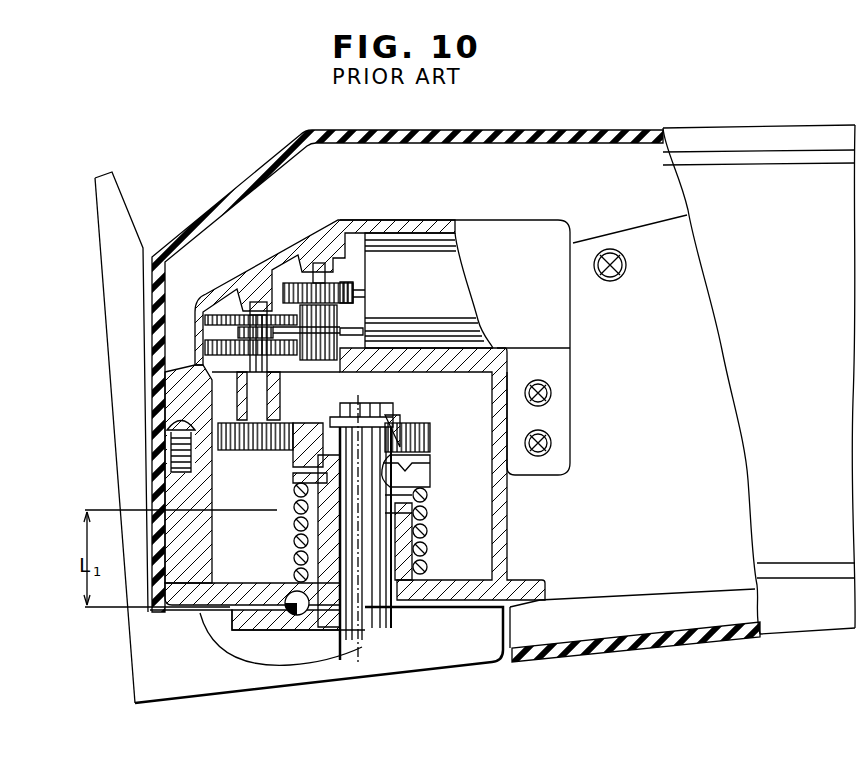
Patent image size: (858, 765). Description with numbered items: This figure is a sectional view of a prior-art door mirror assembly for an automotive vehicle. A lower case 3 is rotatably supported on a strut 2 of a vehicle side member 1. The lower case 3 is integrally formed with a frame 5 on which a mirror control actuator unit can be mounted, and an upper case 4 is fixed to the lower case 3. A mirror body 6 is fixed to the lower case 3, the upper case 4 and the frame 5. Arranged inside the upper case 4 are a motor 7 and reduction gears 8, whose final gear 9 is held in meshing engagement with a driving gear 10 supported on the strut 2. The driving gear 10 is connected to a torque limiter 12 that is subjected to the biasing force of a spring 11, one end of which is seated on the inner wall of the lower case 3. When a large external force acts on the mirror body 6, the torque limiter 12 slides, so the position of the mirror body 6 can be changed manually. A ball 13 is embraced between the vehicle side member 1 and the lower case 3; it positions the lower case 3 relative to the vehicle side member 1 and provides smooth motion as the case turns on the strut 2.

The vehicle side member 1 is at (117, 210).
The strut 2 is at (334, 580).
The lower case 3 is at (222, 612).
The upper case 4 is at (286, 255).
The frame 5 is at (698, 336).
The mirror body 6 is at (589, 144).
The motor 7 is at (400, 250).
The reduction gears 8 is at (227, 316).
The final gear 9 is at (253, 452).
The driving gear 10 is at (430, 430).
The spring 11 is at (432, 550).
The torque limiter 12 is at (432, 472).
The ball 13 is at (292, 592).